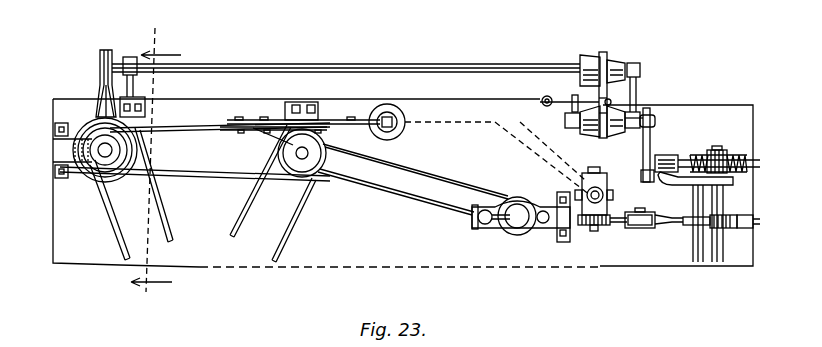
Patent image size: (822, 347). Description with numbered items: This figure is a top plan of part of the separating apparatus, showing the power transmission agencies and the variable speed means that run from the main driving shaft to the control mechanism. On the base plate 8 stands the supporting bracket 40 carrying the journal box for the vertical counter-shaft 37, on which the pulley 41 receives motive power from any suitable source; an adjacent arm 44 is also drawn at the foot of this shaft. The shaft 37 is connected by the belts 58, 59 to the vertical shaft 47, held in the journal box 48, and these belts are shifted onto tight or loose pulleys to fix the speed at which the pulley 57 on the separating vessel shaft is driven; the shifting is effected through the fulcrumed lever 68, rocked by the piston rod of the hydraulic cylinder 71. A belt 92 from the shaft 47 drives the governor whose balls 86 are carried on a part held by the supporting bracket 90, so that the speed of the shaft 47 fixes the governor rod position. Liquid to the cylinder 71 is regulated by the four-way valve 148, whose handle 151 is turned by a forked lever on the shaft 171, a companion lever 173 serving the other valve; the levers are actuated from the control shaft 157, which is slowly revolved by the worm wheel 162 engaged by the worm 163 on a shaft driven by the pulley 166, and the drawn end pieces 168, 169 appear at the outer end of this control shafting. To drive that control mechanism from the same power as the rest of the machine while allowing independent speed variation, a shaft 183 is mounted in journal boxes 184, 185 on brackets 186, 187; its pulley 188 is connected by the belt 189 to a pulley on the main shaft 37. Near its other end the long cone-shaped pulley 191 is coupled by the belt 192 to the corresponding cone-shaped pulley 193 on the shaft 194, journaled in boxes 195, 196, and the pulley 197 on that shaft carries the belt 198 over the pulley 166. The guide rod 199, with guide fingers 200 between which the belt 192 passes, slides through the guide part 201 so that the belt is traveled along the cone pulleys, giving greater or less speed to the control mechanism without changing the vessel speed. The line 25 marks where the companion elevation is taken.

The base plate 8 is at (65, 238).
The section line 25 is at (154, 162).
The counter-shaft 37 is at (112, 148).
The supporting bracket 40 is at (66, 143).
The pulley 41 is at (115, 181).
The arm 44 is at (126, 250).
The vertical shaft 47 is at (258, 212).
The journal box 48 is at (310, 160).
The pulley 57 is at (283, 243).
The belt 58 is at (210, 176).
The belt 59 is at (150, 172).
The fulcrumed lever 68 is at (258, 120).
The hydraulic cylinder 71 is at (403, 131).
The governor balls 86 is at (487, 225).
The supporting bracket 90 is at (545, 230).
The belt 92 is at (427, 176).
The four-way valve 148 is at (596, 232).
The handle 151 is at (625, 230).
The shaft 157 is at (725, 196).
The worm wheel 162 is at (748, 160).
The worm 163 is at (726, 152).
The pulley 166 is at (662, 170).
The coupling 168 is at (726, 230).
The end block 169 is at (758, 228).
The shaft 171 is at (697, 197).
The lever 173 is at (672, 228).
The shaft 183 is at (333, 64).
The journal box 184 is at (135, 56).
The journal box 185 is at (637, 64).
The bracket 186 is at (140, 89).
The bracket 187 is at (638, 90).
The pulley 188 is at (100, 53).
The belt 189 is at (100, 88).
The cone-shaped pulley 191 is at (598, 52).
The belt 192 is at (618, 58).
The cone-shaped pulley 193 is at (590, 134).
The shaft 194 is at (657, 121).
The journal box 195 is at (638, 128).
The journal box 196 is at (565, 116).
The pulley 197 is at (652, 115).
The belt 198 is at (646, 140).
The guide rod 199 is at (540, 101).
The guide fingers 200 is at (599, 98).
The guide part 201 is at (599, 113).